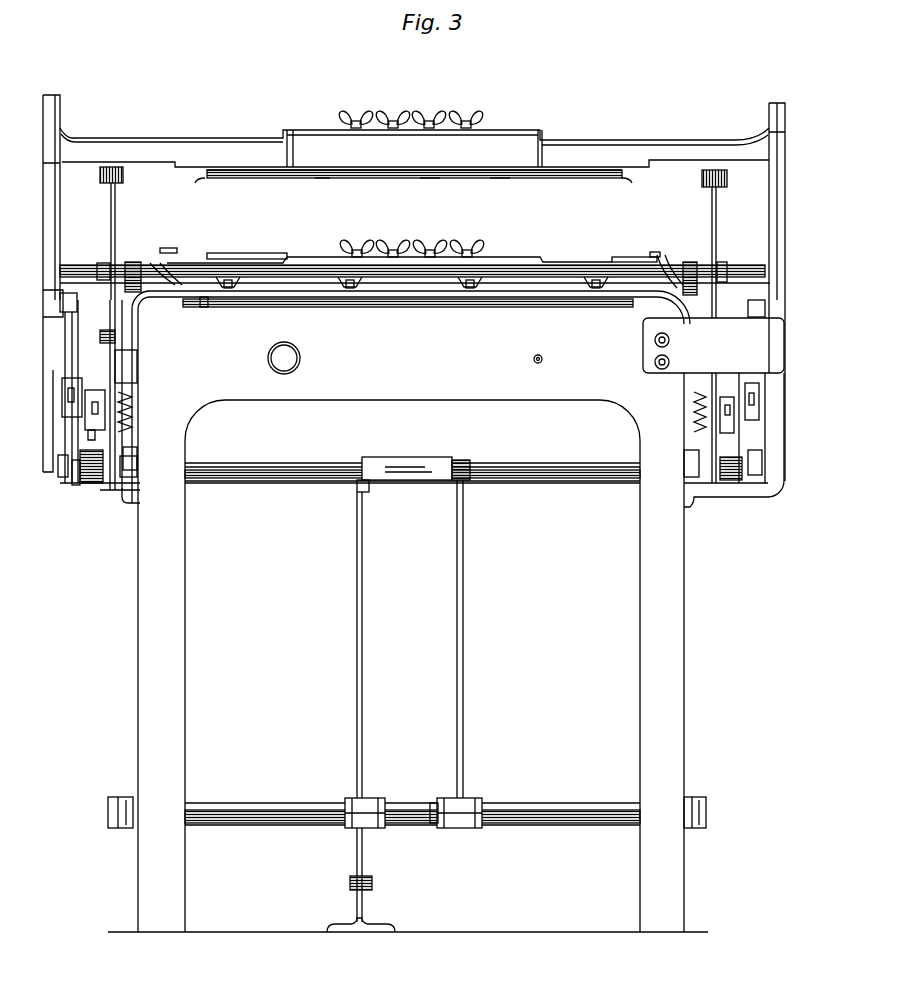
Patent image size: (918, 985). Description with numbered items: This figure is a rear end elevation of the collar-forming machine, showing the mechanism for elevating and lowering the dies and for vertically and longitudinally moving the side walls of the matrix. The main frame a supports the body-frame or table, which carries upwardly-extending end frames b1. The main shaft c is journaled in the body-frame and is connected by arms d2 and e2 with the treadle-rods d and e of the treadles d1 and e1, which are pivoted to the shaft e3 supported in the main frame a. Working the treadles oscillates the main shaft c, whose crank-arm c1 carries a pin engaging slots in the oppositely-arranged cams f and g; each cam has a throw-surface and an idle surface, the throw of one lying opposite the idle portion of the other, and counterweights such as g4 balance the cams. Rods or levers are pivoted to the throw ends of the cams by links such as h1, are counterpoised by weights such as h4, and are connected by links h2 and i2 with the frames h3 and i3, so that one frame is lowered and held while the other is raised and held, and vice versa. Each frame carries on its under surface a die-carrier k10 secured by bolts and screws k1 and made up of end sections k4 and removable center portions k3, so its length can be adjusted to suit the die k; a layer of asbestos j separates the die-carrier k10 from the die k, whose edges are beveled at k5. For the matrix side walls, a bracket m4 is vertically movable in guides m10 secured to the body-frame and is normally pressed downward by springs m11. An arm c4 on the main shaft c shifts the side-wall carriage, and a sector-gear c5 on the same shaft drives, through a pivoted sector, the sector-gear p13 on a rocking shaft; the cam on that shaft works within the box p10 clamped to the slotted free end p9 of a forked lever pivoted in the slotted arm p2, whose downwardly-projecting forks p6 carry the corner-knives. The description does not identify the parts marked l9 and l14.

The main frame a is at (183, 660).
The end frame b1 is at (53, 107).
The main shaft c is at (265, 483).
The crank-arm c1 is at (94, 487).
The arm c4 is at (107, 497).
The sector-gear c5 is at (130, 493).
The treadle-rod d is at (363, 692).
The treadle d1 is at (366, 905).
The arm d2 is at (368, 494).
The treadle-rod e is at (464, 670).
The treadle e1 is at (478, 828).
The arm e2 is at (459, 460).
The shaft e3 is at (253, 828).
The cam f is at (77, 488).
The cam g is at (90, 444).
The counterweight g4 is at (90, 423).
The link h1 is at (68, 464).
The link h2 is at (67, 334).
The frame h3 is at (322, 257).
The counterpoising-weight h4 is at (62, 403).
The link i2 is at (112, 206).
The frame i3 is at (200, 150).
The layer of asbestos j is at (499, 178).
The die k is at (357, 178).
The bolts and screws k1 is at (440, 116).
The center portions k3 is at (431, 178).
The end sections k4 is at (252, 176).
The beveled edge k5 is at (200, 182).
The die-carrier k10 is at (325, 178).
The pin l9 is at (533, 359).
The opening l14 is at (302, 358).
The bracket m4 is at (125, 333).
The guides m10 is at (127, 367).
The springs m11 is at (128, 405).
The slotted arm p2 is at (230, 256).
The forks p6 is at (158, 257).
The free end p9 is at (729, 263).
The cam-box p10 is at (101, 263).
The sector-gear p13 is at (682, 258).